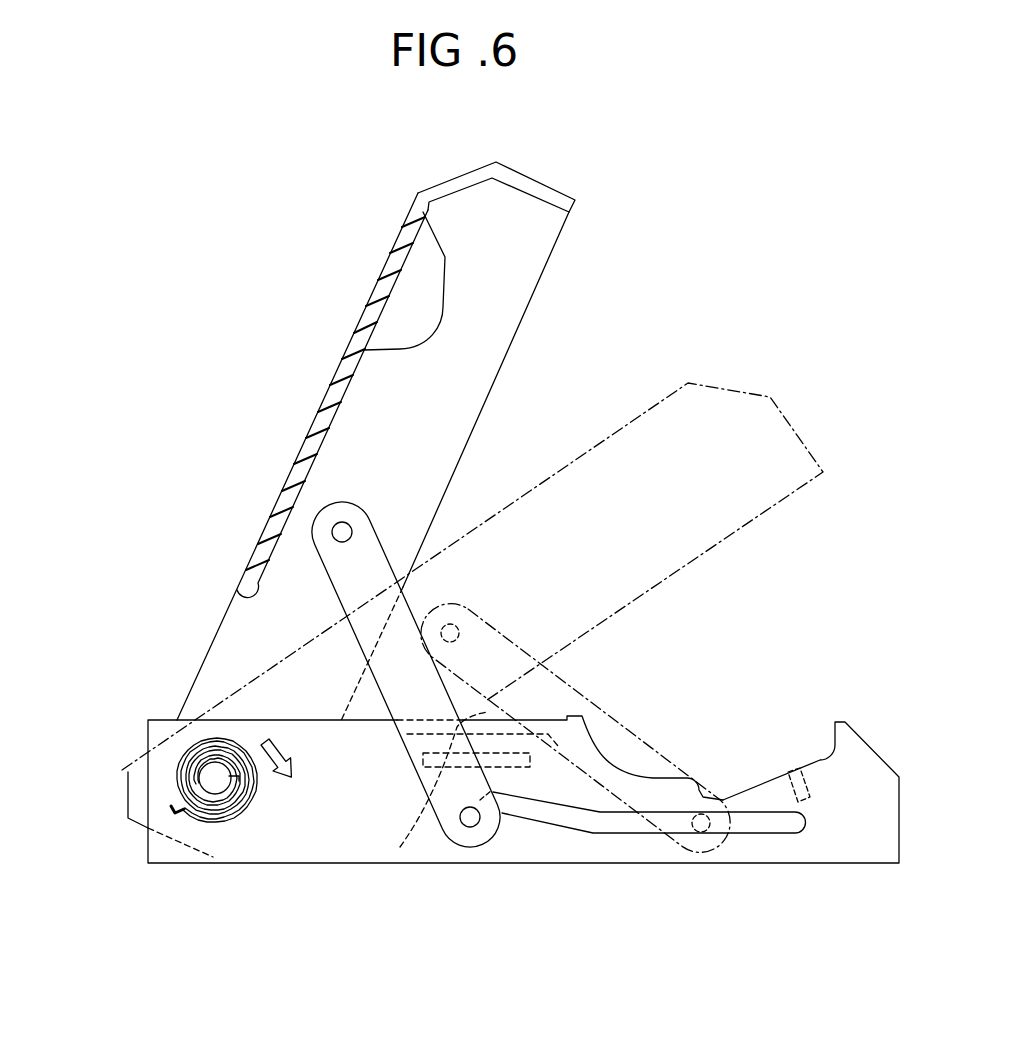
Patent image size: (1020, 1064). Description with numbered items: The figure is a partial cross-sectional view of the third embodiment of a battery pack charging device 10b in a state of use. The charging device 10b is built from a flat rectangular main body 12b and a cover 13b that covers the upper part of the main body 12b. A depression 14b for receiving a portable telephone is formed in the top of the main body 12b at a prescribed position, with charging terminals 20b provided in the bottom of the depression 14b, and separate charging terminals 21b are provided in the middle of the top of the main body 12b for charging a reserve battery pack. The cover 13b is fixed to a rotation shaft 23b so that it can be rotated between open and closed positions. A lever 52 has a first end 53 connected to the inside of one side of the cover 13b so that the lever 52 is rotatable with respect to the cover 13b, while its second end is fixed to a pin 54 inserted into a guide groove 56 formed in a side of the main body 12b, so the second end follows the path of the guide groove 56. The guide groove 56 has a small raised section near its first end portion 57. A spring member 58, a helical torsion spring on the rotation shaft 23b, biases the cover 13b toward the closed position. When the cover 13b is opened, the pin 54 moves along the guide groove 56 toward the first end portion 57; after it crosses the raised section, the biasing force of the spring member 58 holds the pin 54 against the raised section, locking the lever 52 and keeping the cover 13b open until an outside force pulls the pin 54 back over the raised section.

The charging device 10b is at (207, 567).
The main body 12b is at (868, 745).
The cover 13b is at (378, 275).
The depression 14b is at (748, 792).
The charging terminals 20b is at (788, 772).
The separate charging terminals 21b is at (400, 847).
The rotation shaft 23b is at (190, 773).
The lever 52 is at (333, 590).
The first end 53 is at (337, 527).
The pin 54 is at (468, 828).
The guide groove 56 is at (603, 832).
The first end portion 57 is at (490, 818).
The spring member 58 is at (235, 813).